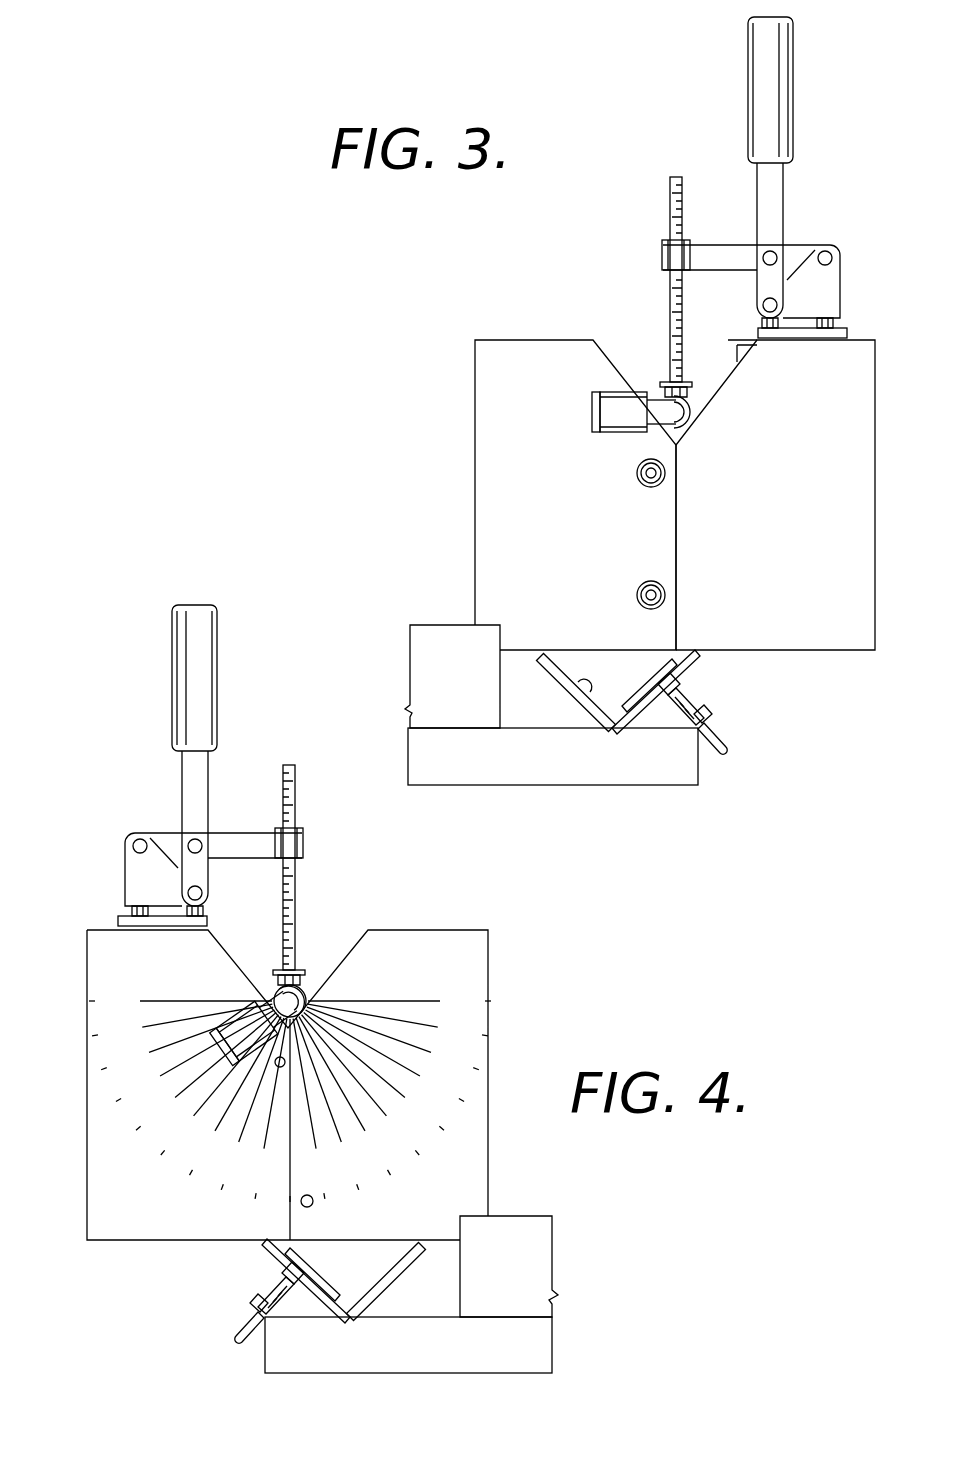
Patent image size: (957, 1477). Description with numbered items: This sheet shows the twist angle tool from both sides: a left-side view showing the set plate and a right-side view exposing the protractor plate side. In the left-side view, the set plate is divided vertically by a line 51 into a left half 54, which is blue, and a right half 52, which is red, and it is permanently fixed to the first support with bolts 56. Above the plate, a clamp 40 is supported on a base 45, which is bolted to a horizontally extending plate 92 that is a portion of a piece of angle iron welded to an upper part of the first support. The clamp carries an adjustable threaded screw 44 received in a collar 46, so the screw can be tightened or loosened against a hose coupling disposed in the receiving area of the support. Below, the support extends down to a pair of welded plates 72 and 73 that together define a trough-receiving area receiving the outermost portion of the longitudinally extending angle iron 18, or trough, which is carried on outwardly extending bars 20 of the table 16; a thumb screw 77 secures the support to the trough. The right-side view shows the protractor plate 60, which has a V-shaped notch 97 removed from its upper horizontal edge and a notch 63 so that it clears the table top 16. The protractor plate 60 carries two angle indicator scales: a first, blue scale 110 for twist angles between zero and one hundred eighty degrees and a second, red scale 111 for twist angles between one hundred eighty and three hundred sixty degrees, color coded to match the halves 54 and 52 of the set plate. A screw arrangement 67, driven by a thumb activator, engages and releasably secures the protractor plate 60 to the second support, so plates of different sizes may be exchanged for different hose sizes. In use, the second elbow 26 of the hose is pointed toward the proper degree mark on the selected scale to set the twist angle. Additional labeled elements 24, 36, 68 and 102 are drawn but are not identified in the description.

In FIG. 3, the table 16 is at (442, 688).
In FIG. 3, the angle iron 18 is at (552, 670).
In FIG. 3, the outwardly extending bars 20 is at (520, 768).
In FIG. 3, the locking screw assembly 24 is at (600, 445).
In FIG. 4, the second elbow 26 is at (325, 990).
In FIG. 4, the locking screw 36 is at (237, 1018).
In FIG. 3, the clamp 40 is at (812, 204).
In FIG. 3, the adjustable threaded screw 44 is at (670, 313).
In FIG. 3, the base 45 is at (803, 328).
In FIG. 3, the collar 46 is at (662, 258).
In FIG. 3, the line 51 is at (678, 463).
In FIG. 3, the half 52 is at (768, 560).
In FIG. 3, the half 54 is at (528, 560).
In FIG. 3, the bolts 56 is at (648, 488).
In FIG. 4, the protractor plate 60 is at (496, 1027).
In FIG. 4, the notch 63 is at (473, 1218).
In FIG. 4, the screw arrangement 67 is at (313, 1206).
In FIG. 3, the pad 68 is at (578, 690).
In FIG. 3, the welded plate 72 is at (698, 654).
In FIG. 3, the welded plate 73 is at (642, 676).
In FIG. 3, the thumb screw 77 is at (728, 750).
In FIG. 3, the horizontally extending plate 92 is at (745, 334).
In FIG. 4, the V-shaped notch 97 is at (314, 932).
In FIG. 3, the locking nut 102 is at (678, 688).
In FIG. 4, the first indicator scale 110 is at (452, 990).
In FIG. 4, the second scale 111 is at (102, 985).